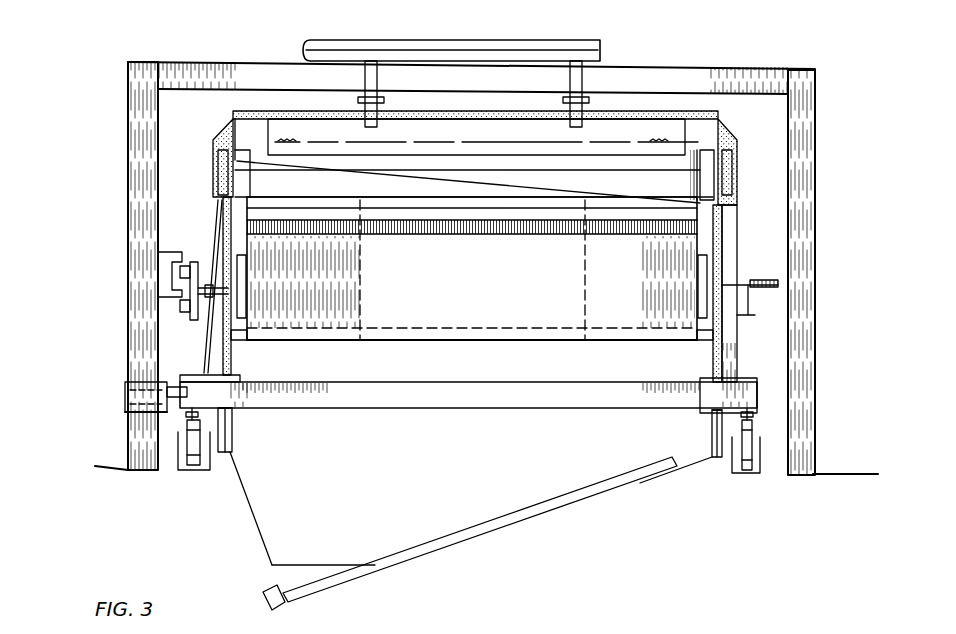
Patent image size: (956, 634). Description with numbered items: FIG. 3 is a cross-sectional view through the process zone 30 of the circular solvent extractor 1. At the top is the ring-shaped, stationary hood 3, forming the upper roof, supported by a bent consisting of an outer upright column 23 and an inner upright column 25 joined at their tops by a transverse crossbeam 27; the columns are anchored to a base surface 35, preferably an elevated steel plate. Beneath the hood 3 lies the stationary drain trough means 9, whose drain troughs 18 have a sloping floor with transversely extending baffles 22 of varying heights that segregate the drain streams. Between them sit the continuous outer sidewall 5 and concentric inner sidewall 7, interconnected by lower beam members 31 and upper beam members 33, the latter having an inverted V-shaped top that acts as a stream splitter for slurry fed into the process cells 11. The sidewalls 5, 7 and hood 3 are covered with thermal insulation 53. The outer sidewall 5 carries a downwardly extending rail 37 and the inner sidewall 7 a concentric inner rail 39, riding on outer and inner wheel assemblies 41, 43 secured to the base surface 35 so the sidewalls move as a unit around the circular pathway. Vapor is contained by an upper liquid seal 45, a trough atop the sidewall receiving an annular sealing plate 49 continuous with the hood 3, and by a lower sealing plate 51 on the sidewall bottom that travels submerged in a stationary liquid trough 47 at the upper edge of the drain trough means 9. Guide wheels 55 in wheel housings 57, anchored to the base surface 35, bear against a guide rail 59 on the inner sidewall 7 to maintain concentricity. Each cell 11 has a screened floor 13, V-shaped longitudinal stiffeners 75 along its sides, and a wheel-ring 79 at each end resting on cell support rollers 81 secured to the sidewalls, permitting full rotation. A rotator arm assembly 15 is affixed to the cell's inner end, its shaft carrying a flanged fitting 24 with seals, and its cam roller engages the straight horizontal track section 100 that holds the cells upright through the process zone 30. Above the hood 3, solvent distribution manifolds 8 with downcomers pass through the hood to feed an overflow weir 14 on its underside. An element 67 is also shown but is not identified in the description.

The circular solvent extractor 1 is at (468, 238).
The stationary hood 3 is at (466, 194).
The outer sidewall 5 is at (727, 352).
The inner sidewall 7 is at (220, 345).
The solvent distribution manifold 8 is at (518, 47).
The drain trough means 9 is at (470, 535).
The process cell 11 is at (545, 289).
The cell floor 13 is at (425, 345).
The overflow weir 14 is at (612, 137).
The rotator arm assembly 15 is at (145, 265).
The drain trough 18 is at (350, 590).
The baffle 22 is at (485, 528).
The outer upright column 23 is at (808, 125).
The flanged fitting 24 is at (215, 240).
The inner upright column 25 is at (145, 117).
The transverse crossbeam 27 is at (471, 50).
The process zone 30 is at (237, 52).
The lower beam member 31 is at (498, 400).
The upper beam member 33 is at (520, 200).
The base surface 35 is at (95, 466).
The outer rail 37 is at (750, 420).
The inner rail 39 is at (180, 425).
The outer wheel assembly 41 is at (795, 460).
The inner wheel assembly 43 is at (170, 459).
The upper liquid seal 45 is at (735, 180).
The lower liquid seal trough 47 is at (232, 445).
The annular sealing plate 49 is at (735, 162).
The lower annular sealing plate 51 is at (232, 423).
The thermal insulation 53 is at (283, 112).
The guide wheel 55 is at (127, 387).
The wheel housing 57 is at (170, 400).
The guide rail 59 is at (165, 410).
The bracket 67 is at (760, 305).
The longitudinal stiffener 75 is at (615, 230).
The wheel-ring 79 is at (240, 280).
The cell support roller 81 is at (238, 340).
The straight track section 100 is at (165, 295).